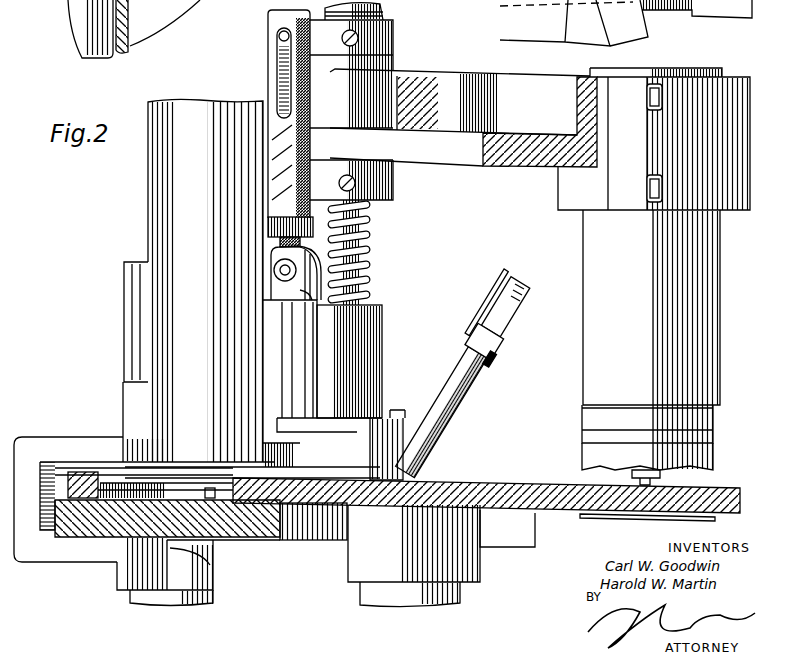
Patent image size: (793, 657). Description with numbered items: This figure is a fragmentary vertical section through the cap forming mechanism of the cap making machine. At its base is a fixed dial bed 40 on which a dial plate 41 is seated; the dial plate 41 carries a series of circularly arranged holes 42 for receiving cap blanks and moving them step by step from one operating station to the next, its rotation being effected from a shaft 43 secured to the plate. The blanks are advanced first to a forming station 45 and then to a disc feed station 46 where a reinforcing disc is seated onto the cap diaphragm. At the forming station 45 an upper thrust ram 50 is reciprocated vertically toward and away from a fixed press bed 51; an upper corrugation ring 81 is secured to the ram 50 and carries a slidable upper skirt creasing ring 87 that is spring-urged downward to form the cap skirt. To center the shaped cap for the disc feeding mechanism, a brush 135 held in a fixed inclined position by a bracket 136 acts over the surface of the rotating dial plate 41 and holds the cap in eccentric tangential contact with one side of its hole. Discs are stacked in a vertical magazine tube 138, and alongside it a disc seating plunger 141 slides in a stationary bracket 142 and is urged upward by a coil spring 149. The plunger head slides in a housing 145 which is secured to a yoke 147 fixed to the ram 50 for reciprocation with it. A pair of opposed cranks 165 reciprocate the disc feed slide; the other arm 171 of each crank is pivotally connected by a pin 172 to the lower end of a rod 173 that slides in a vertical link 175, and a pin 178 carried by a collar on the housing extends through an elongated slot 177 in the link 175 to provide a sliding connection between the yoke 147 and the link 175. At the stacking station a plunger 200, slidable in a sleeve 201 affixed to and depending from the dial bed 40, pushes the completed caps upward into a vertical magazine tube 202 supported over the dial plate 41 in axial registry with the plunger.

The dial bed 40 is at (73, 530).
The dial plate 41 is at (527, 497).
The dial plate holes 42 is at (158, 492).
The shaft 43 is at (370, 593).
The forming station 45 is at (739, 264).
The disc feed station 46 is at (386, 378).
The upper thrust ram 50 is at (693, 335).
The press bed 51 is at (713, 514).
The upper corrugation ring 81 is at (713, 420).
The upper skirt creasing ring 87 is at (712, 458).
The brush 135 is at (447, 417).
The bracket 136 is at (494, 359).
The magazine tube 138 is at (277, 43).
The disc seating plunger 141 is at (368, 225).
The stationary bracket 142 is at (379, 318).
The housing 145 is at (383, 13).
The yoke 147 is at (512, 160).
The coil spring 149 is at (368, 213).
The cranks 165 is at (306, 289).
The crank arm 171 is at (275, 266).
The pin 172 is at (281, 276).
The rod 173 is at (267, 242).
The vertical link 175 is at (271, 59).
The elongated slot 177 is at (297, 80).
The pin 178 is at (280, 33).
The plunger 200 is at (205, 601).
The sleeve 201 is at (220, 570).
The magazine tube 202 is at (123, 408).